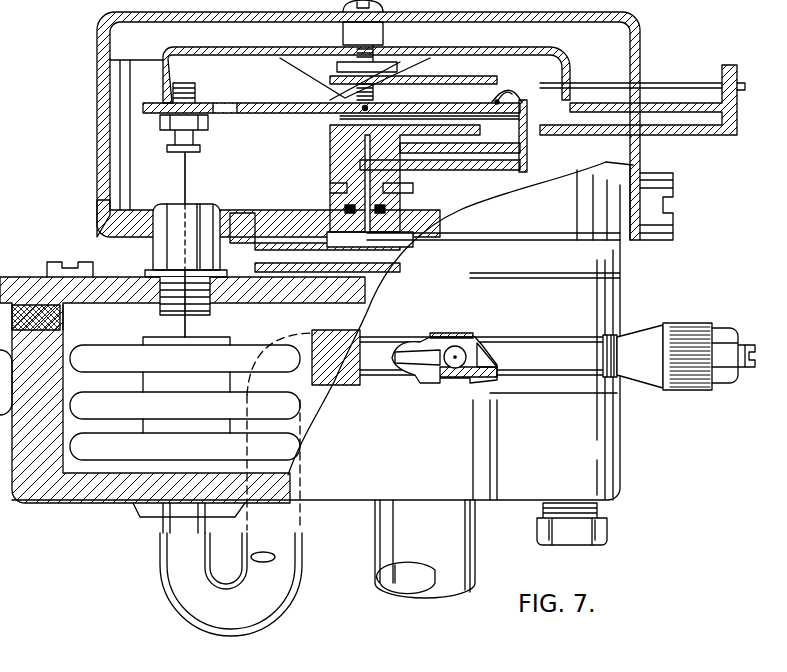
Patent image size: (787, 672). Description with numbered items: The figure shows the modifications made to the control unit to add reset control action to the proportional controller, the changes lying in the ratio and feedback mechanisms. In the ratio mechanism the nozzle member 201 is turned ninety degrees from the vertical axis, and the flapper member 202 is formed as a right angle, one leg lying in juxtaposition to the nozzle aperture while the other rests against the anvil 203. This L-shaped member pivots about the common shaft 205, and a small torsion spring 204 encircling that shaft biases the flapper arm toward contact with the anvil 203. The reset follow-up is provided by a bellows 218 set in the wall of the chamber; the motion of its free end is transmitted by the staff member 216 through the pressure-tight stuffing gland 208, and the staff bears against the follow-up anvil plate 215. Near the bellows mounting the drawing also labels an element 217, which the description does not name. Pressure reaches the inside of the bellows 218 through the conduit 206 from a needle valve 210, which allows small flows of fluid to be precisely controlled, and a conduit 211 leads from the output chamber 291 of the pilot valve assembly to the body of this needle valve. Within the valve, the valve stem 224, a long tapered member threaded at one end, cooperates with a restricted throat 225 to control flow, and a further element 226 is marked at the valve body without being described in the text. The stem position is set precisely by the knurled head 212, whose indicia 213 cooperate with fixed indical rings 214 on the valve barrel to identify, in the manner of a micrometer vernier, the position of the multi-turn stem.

The nozzle member 201 is at (455, 170).
The flapper member 202 is at (527, 153).
The anvil 203 is at (333, 96).
The torsion spring 204 is at (498, 100).
The common shaft 205 is at (496, 104).
The conduit 206 is at (165, 568).
The stuffing gland 208 is at (160, 253).
The needle valve 210 is at (512, 345).
The conduit 211 is at (452, 334).
The knurled head 212 is at (712, 330).
The indicia 213 is at (625, 337).
The fixed indical rings 214 is at (604, 353).
The follow-up anvil plate 215 is at (200, 149).
The staff member 216 is at (186, 181).
The seal 217 is at (99, 320).
The bellows 218 is at (95, 366).
The valve stem 224 is at (417, 358).
The throat 225 is at (418, 343).
The pivot pin 226 is at (456, 365).
The output chamber 291 is at (321, 328).